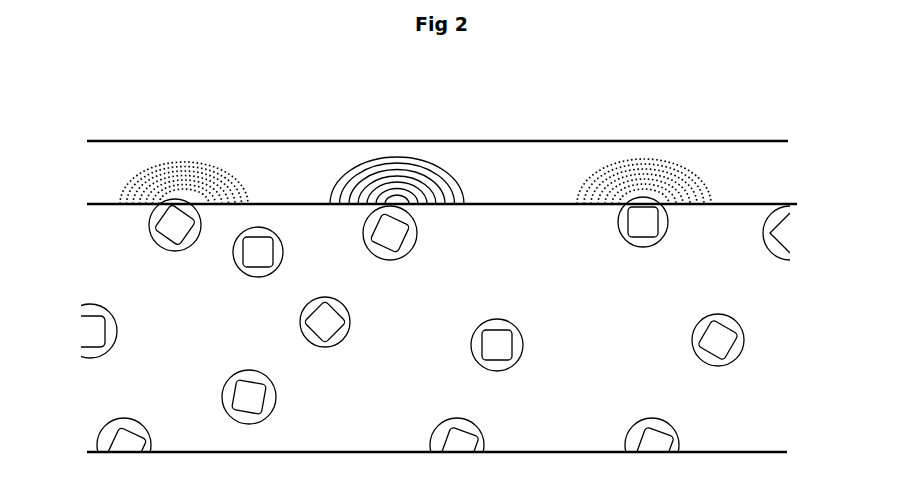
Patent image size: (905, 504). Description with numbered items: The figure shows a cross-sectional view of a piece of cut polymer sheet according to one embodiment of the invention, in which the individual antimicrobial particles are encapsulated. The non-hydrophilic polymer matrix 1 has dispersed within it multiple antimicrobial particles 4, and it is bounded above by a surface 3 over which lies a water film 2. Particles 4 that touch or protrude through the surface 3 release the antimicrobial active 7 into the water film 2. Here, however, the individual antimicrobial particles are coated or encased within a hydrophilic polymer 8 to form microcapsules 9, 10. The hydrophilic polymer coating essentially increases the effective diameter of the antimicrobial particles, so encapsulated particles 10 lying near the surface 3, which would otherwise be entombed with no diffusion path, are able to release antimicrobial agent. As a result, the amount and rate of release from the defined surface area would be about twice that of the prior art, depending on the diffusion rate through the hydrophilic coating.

The non-hydrophilic polymer matrix 1 is at (102, 390).
The water film 2 is at (285, 176).
The surface 3 is at (96, 200).
The antimicrobial particles 4 is at (376, 240).
The antimicrobial active 7 is at (180, 197).
The hydrophilic polymer 8 is at (345, 335).
The microcapsules 9 is at (300, 325).
The encapsulated particles 10 is at (391, 218).